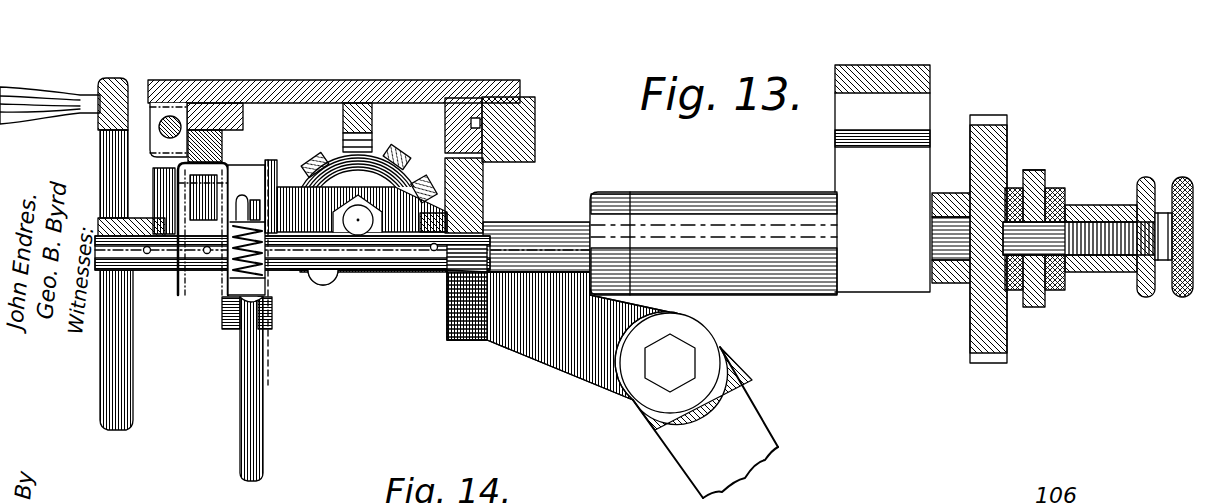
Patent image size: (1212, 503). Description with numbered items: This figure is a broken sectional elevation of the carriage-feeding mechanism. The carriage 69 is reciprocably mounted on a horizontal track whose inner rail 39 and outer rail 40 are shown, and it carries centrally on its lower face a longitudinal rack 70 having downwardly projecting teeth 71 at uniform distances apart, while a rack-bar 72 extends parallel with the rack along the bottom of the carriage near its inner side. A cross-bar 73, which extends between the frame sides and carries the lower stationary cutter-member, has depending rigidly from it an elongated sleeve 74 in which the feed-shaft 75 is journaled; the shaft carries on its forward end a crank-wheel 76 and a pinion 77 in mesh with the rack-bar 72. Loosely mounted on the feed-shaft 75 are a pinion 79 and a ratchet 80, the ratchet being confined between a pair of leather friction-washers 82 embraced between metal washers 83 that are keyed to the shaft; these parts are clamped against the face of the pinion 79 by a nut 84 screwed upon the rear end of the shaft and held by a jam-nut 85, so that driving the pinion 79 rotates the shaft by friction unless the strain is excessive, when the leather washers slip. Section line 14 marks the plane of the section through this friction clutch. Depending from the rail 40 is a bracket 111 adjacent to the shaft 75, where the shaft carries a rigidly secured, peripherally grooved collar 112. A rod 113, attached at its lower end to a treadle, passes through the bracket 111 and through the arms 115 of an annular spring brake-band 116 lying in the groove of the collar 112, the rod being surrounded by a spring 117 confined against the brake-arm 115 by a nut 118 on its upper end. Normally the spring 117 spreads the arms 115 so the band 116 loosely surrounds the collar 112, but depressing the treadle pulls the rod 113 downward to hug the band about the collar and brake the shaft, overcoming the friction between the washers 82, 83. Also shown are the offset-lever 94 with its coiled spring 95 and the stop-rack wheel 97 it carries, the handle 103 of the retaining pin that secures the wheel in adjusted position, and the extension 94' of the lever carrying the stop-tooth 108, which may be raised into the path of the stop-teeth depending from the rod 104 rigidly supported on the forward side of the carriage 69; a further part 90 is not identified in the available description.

The crank-wheel 76 is at (97, 84).
The stop-tooth 108 is at (153, 168).
The rod 104 is at (173, 120).
The outer rail 40 is at (212, 130).
The section line 14 is at (310, 158).
The nut 118 is at (237, 262).
The carriage 69 is at (428, 84).
The longitudinal rack 70 is at (345, 122).
The teeth 71 is at (372, 140).
The stop-rack wheel 97 is at (391, 166).
The coiled spring 95 is at (409, 168).
The inner rail 39 is at (535, 105).
The rack-bar 72 is at (468, 143).
The spring 117 is at (250, 283).
The bracket 111 is at (225, 290).
The feed-shaft 75 is at (170, 272).
The collar 112 is at (225, 325).
The brake-band 116 is at (236, 330).
The rod 113 is at (248, 423).
The extension 94' is at (291, 272).
The handle 103 is at (321, 280).
The cam 90 is at (358, 224).
The arms 115 is at (293, 272).
The pinion 77 is at (467, 330).
The offset-lever 94 is at (534, 384).
The sleeve 74 is at (713, 243).
The cross-bar 73 is at (930, 77).
The metal washers 83 is at (1013, 188).
The friction-washers 82 is at (1043, 175).
The ratchet 80 is at (1040, 307).
The nut 84 is at (1146, 297).
The jam-nut 85 is at (1182, 297).
The pinion 79 is at (987, 363).